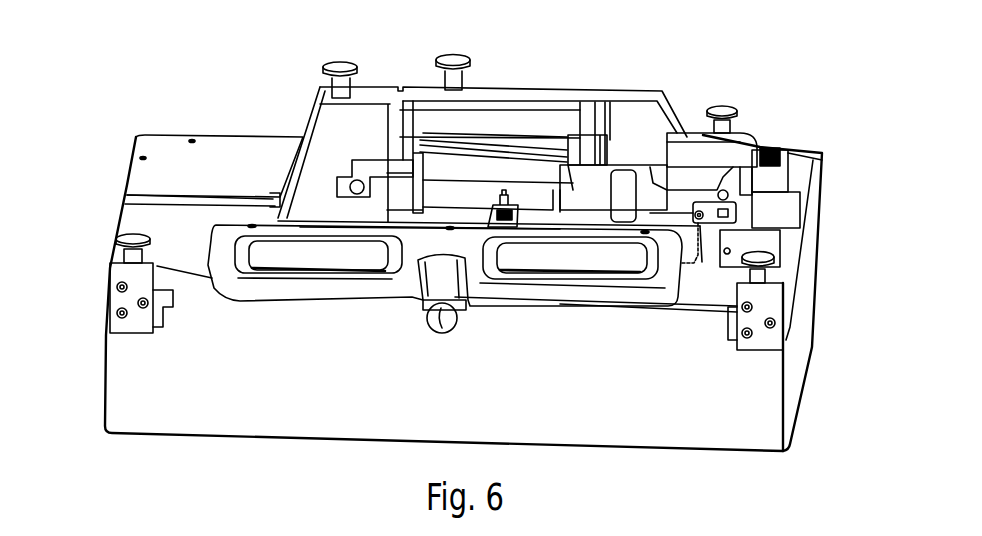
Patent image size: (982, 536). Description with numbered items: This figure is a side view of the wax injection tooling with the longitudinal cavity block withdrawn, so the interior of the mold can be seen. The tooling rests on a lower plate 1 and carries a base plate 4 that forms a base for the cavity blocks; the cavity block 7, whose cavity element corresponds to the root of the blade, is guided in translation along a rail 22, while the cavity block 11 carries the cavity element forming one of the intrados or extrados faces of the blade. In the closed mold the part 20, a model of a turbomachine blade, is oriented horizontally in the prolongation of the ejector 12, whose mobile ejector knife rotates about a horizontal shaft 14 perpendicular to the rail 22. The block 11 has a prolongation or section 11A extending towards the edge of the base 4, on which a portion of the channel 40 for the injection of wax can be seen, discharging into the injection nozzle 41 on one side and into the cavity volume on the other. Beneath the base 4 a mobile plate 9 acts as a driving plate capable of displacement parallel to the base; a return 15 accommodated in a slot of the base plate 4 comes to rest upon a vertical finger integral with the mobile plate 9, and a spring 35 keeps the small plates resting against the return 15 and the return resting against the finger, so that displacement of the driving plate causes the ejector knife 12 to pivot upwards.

The lower plate 1 is at (793, 330).
The base plate 4 is at (158, 147).
The cavity block 7 is at (313, 98).
The mobile plate 9 is at (783, 303).
The cavity block 11 is at (590, 93).
The prolongation of cavity block 11A is at (770, 163).
The ejector 12 is at (690, 137).
The horizontal shaft 14 is at (763, 150).
The return 15 is at (768, 272).
The part 20 is at (520, 137).
The rail 22 is at (122, 202).
The spring 35 is at (780, 231).
The channel 40 is at (788, 168).
The injection nozzle 41 is at (753, 193).